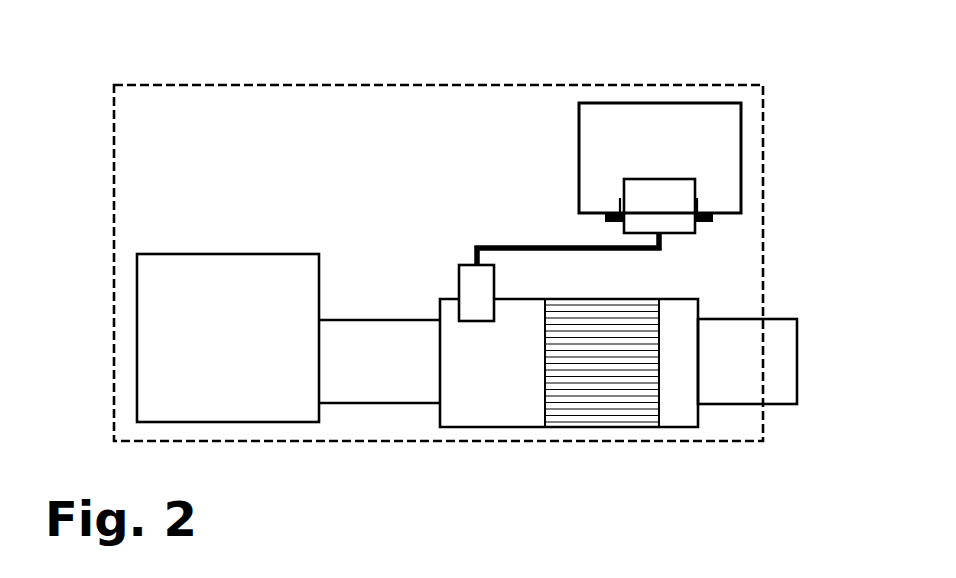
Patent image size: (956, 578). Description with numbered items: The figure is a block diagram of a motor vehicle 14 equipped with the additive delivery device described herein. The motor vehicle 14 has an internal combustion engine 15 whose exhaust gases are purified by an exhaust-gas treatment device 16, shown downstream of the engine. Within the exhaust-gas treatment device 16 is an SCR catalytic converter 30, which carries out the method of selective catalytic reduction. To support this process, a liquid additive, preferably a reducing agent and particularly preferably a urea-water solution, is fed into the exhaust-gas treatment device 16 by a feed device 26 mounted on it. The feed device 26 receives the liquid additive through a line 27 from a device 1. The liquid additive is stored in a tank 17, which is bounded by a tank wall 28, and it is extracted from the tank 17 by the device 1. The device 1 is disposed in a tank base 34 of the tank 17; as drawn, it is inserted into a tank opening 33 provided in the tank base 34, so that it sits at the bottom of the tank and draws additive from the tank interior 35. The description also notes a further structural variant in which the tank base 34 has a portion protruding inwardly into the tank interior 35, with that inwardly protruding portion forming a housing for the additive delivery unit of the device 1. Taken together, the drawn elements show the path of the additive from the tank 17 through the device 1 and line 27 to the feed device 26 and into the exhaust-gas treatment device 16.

The device 1 is at (695, 234).
The motor vehicle 14 is at (764, 70).
The internal combustion engine 15 is at (233, 254).
The exhaust-gas treatment device 16 is at (523, 299).
The tank 17 is at (580, 123).
The feed device 26 is at (460, 265).
The line 27 is at (520, 245).
The tank wall 28 is at (580, 140).
The SCR catalytic converter 30 is at (618, 428).
The tank opening 33 is at (698, 203).
The tank base 34 is at (732, 215).
The tank interior 35 is at (715, 138).